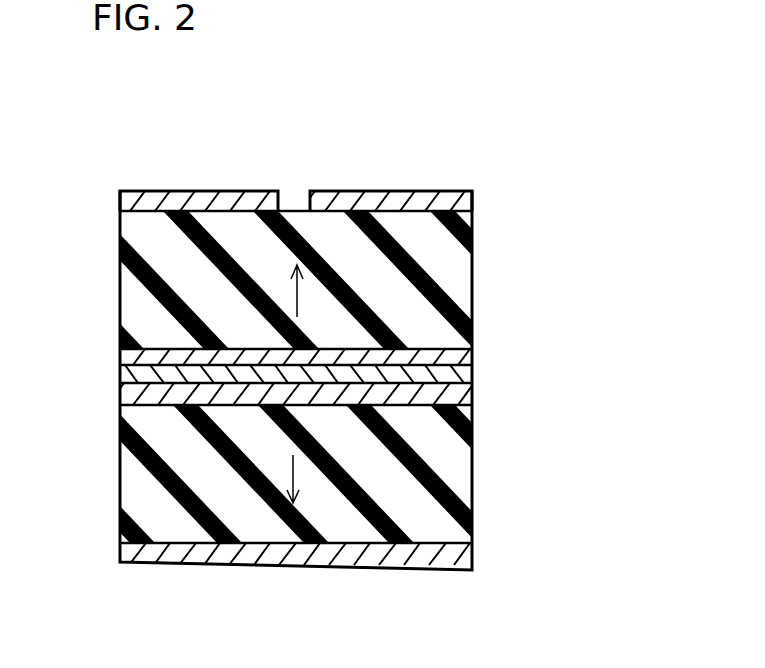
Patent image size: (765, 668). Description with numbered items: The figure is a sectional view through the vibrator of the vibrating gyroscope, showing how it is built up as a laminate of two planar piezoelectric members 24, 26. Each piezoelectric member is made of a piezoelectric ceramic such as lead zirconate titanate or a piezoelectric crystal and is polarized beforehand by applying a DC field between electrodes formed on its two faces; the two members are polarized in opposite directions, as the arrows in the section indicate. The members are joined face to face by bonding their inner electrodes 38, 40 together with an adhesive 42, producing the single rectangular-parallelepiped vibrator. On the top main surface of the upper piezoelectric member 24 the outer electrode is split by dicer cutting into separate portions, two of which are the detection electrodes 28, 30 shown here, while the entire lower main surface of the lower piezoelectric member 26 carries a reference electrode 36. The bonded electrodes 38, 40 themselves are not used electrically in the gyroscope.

The piezoelectric member 24 is at (432, 271).
The piezoelectric member 26 is at (440, 472).
The detection electrode 28 is at (197, 193).
The detection electrode 30 is at (405, 200).
The reference electrode 36 is at (283, 557).
The electrode 38 is at (470, 363).
The electrode 40 is at (470, 400).
The adhesive 42 is at (470, 382).